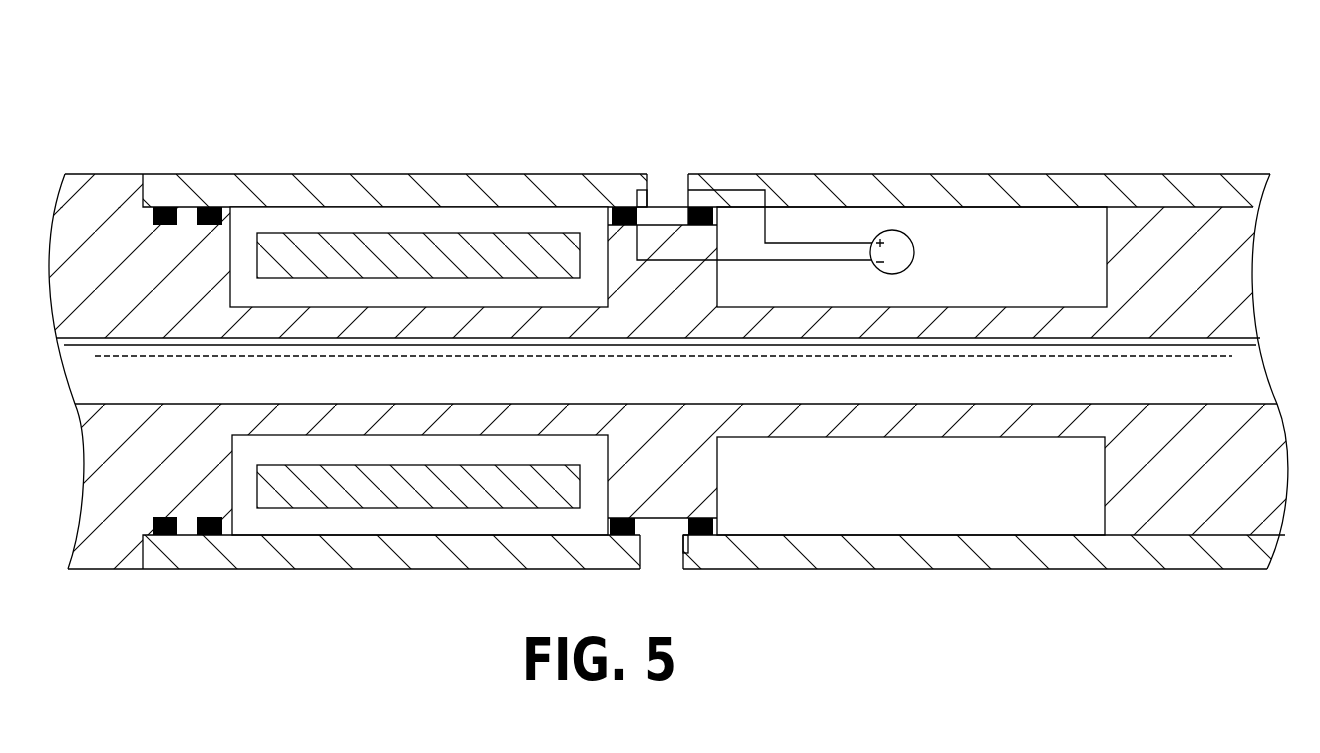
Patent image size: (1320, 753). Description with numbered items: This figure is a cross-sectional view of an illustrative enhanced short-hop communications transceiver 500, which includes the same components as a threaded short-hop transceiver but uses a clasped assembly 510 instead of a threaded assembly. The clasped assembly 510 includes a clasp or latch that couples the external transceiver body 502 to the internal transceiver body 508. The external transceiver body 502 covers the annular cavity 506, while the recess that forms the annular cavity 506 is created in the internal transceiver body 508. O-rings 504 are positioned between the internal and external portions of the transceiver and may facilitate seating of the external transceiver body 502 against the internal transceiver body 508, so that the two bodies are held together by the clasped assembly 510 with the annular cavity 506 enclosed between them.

The enhanced short-hop communications transceiver 500 is at (670, 329).
The external transceiver body 502 is at (1200, 184).
The O-rings 504 is at (150, 218).
The annular cavity 506 is at (338, 223).
The internal transceiver body 508 is at (1175, 518).
The clasped assembly 510 is at (700, 143).